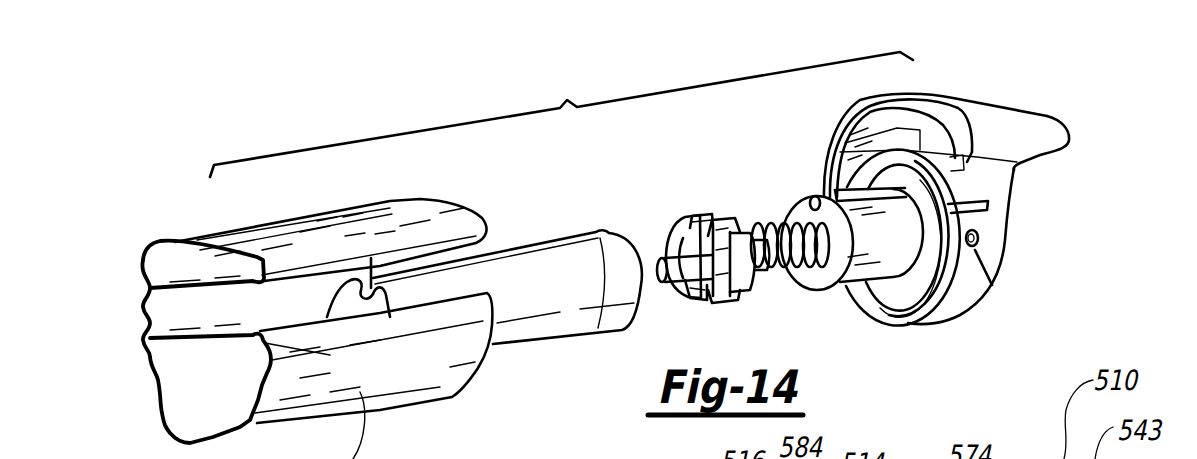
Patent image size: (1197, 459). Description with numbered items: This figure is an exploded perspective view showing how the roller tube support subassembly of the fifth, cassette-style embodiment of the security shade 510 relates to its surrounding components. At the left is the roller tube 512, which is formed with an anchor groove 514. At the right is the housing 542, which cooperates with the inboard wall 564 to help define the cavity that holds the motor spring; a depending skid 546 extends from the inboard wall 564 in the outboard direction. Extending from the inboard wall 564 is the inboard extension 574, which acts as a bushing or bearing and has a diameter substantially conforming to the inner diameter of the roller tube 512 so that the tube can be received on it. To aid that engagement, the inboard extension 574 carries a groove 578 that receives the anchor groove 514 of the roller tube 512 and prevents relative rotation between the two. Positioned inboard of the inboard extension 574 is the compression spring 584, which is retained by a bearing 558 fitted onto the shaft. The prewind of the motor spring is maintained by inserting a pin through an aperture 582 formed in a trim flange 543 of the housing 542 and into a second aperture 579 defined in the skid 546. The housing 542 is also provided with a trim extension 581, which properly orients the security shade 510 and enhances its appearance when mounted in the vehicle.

The security shade 510 is at (561, 114).
The roller tube 512 is at (541, 323).
The anchor groove 514 is at (566, 231).
The housing 542 is at (1008, 132).
The trim flange 543 is at (953, 120).
The skid 546 is at (965, 200).
The bearing 558 is at (740, 280).
The inboard wall 564 is at (920, 272).
The inboard extension 574 is at (873, 247).
The groove 578 is at (816, 196).
The second aperture 579 is at (995, 282).
The trim extension 581 is at (1060, 133).
The aperture 582 is at (980, 242).
The compression spring 584 is at (784, 272).